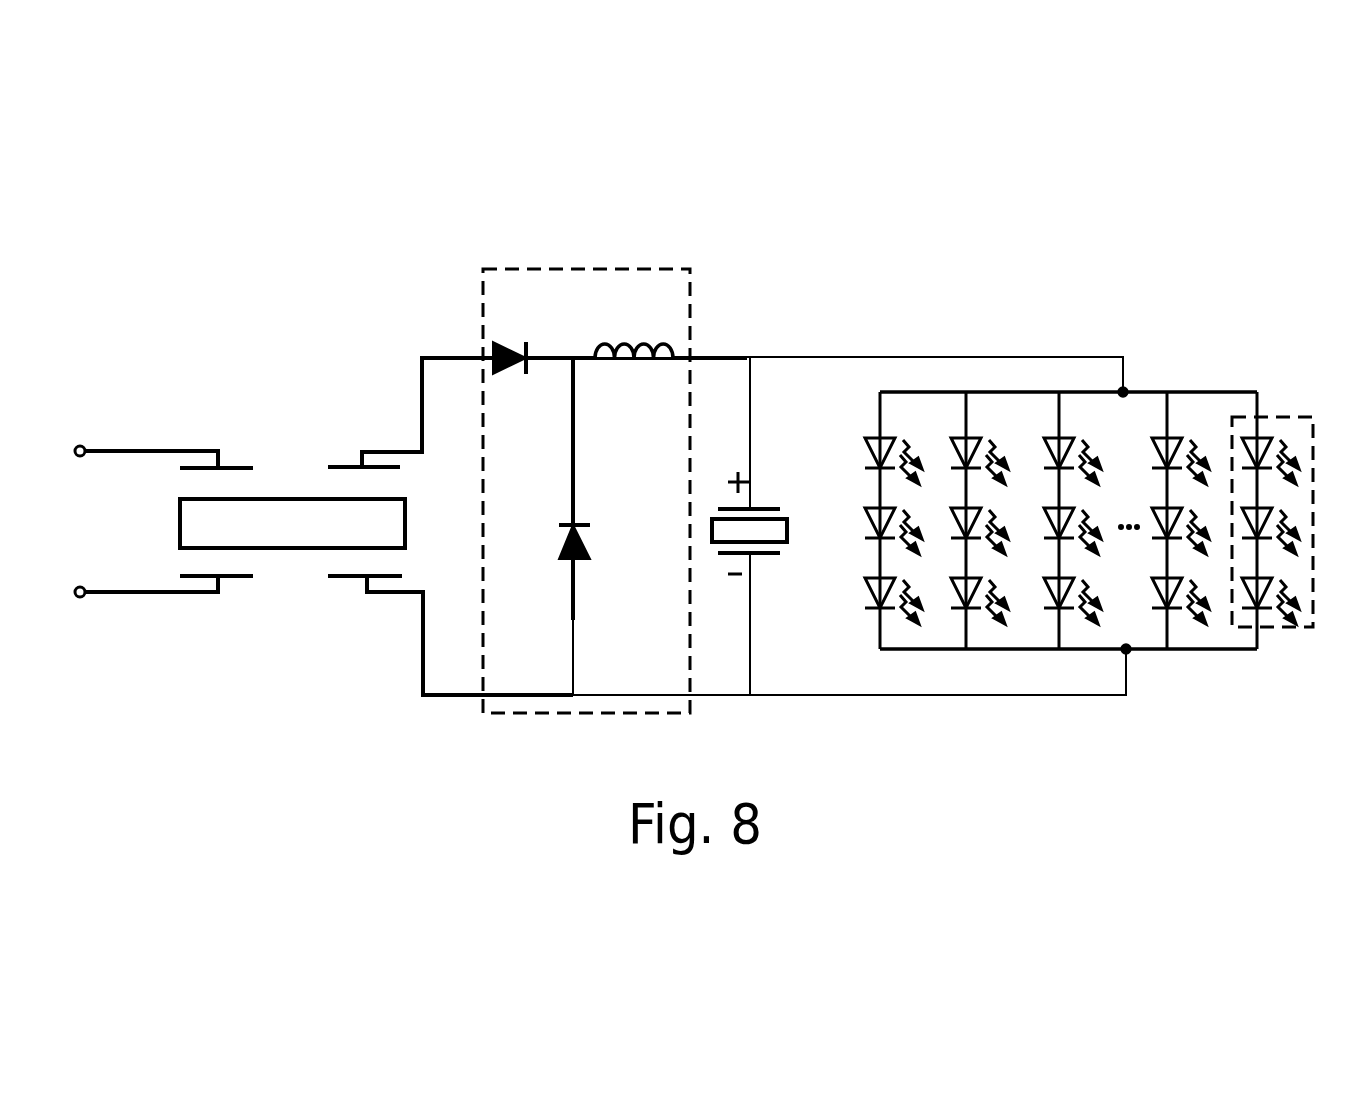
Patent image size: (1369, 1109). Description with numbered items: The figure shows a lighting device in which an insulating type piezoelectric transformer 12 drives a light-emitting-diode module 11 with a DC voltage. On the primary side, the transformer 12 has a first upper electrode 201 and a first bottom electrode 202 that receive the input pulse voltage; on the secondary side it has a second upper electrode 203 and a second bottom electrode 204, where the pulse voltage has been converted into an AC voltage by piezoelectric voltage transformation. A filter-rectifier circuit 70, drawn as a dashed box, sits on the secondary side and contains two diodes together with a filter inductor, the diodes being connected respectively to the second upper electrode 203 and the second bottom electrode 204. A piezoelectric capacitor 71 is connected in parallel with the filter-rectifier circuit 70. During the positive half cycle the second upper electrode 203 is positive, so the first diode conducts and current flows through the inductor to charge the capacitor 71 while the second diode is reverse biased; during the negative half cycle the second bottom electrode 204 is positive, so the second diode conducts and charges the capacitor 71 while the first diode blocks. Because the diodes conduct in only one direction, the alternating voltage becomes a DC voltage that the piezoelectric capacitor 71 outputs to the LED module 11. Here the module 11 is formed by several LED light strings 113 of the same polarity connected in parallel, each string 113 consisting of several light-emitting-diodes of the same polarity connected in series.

The light-emitting-diode module 11 is at (1106, 437).
The LED light string 113 is at (1257, 413).
The insulating type piezoelectric transformer 12 is at (285, 457).
The first upper electrode 201 is at (242, 465).
The first bottom electrode 202 is at (242, 578).
The second upper electrode 203 is at (338, 467).
The second bottom electrode 204 is at (344, 580).
The filter-rectifier circuit 70 is at (587, 268).
The piezoelectric capacitor 71 is at (787, 540).